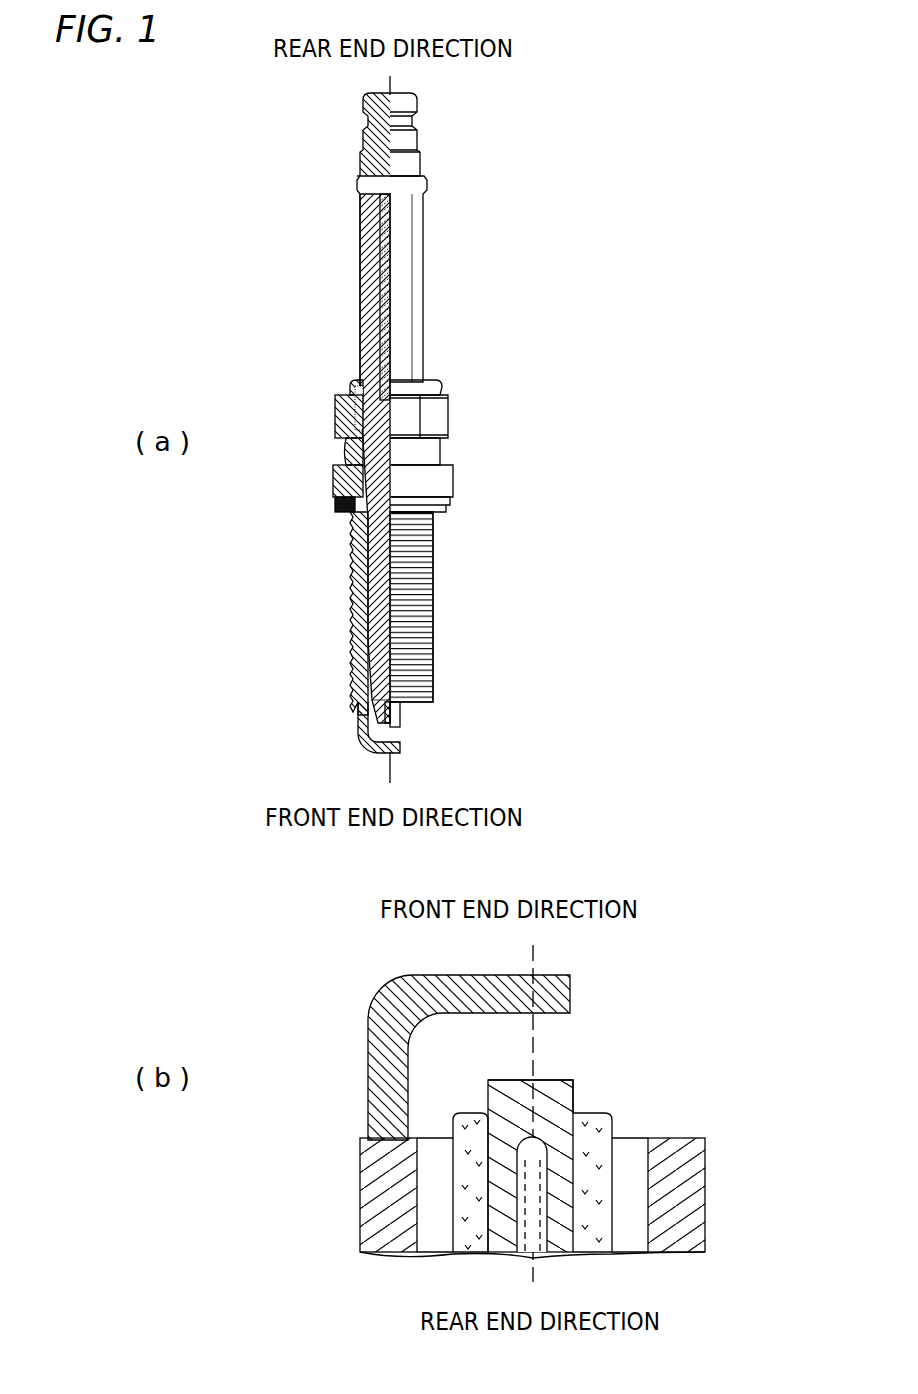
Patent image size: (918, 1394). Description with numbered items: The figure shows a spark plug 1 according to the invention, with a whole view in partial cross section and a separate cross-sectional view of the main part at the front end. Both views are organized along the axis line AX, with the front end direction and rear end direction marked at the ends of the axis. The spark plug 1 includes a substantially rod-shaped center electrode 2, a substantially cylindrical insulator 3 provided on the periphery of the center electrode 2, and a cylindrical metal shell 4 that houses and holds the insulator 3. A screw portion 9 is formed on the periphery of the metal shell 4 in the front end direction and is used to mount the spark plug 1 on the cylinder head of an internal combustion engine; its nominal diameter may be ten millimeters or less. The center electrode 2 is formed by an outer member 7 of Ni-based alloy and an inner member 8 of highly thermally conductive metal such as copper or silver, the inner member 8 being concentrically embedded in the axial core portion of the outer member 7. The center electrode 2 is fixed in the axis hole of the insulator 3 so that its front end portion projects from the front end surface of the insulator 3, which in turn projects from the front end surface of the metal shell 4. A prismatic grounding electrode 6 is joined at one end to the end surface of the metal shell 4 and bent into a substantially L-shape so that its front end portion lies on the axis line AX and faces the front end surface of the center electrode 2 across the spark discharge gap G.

The spark plug 1 is at (473, 351).
The center electrode 2 is at (402, 727).
The insulator 3 is at (362, 655).
The metal shell 4 is at (353, 678).
The grounding electrode 6 is at (372, 749).
The outer member 7 is at (379, 721).
The inner member 8 is at (380, 706).
The screw portion 9 is at (433, 600).
The spark discharge gap G is at (400, 735).
The axis line AX is at (392, 88).